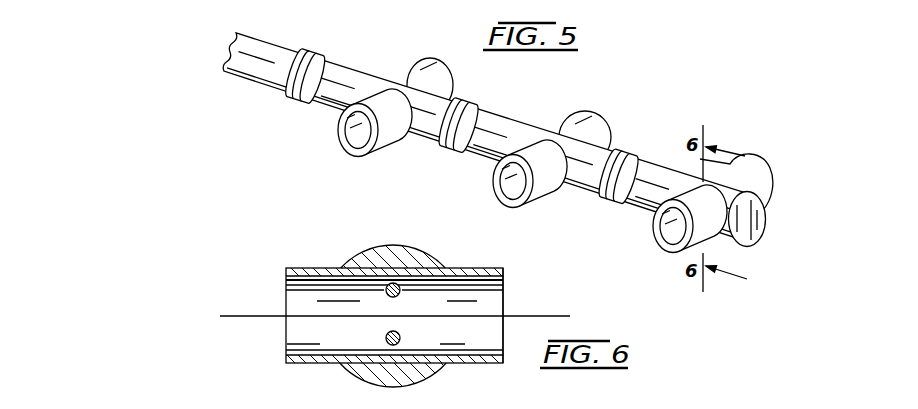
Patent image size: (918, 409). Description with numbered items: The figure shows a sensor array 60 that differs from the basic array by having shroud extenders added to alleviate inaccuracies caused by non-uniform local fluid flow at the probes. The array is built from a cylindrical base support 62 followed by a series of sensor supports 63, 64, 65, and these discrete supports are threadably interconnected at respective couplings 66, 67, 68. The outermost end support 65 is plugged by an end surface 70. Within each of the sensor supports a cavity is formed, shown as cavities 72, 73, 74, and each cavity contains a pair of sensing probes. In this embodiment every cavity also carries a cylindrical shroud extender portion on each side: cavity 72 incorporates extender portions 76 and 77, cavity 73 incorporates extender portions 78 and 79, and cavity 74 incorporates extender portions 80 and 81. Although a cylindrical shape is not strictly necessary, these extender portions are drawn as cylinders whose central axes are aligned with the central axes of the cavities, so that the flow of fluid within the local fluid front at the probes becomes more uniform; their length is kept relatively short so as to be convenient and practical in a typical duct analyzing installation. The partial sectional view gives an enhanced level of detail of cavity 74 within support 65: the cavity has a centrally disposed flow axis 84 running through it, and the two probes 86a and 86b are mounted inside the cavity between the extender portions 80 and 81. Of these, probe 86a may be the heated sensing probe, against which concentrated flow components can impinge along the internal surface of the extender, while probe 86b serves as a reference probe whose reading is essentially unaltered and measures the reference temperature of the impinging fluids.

In FIG. 5, the sensor array 60 is at (672, 62).
In FIG. 5, the cylindrical base support 62 is at (252, 45).
In FIG. 5, the sensor support 63 is at (374, 79).
In FIG. 5, the sensor support 64 is at (507, 123).
In FIG. 5, the end sensor support 65 is at (665, 178).
In FIG. 6, the end sensor support 65 is at (389, 255).
In FIG. 5, the coupling 66 is at (305, 62).
In FIG. 5, the coupling 67 is at (470, 103).
In FIG. 5, the coupling 68 is at (618, 205).
In FIG. 5, the end surface 70 is at (748, 220).
In FIG. 5, the cavity 72 is at (359, 146).
In FIG. 5, the cavity 73 is at (512, 200).
In FIG. 5, the cavity 74 is at (671, 242).
In FIG. 6, the cavity 74 is at (372, 305).
In FIG. 5, the shroud extender portion 76 is at (340, 136).
In FIG. 5, the shroud extender portion 77 is at (432, 72).
In FIG. 5, the shroud extender portion 78 is at (495, 192).
In FIG. 5, the shroud extender portion 79 is at (590, 122).
In FIG. 5, the shroud extender portion 80 is at (654, 234).
In FIG. 6, the shroud extender portion 80 is at (292, 268).
In FIG. 5, the shroud extender portion 81 is at (750, 173).
In FIG. 6, the shroud extender portion 81 is at (473, 270).
In FIG. 6, the flow axis 84 is at (523, 316).
In FIG. 6, the probe 86a is at (400, 339).
In FIG. 6, the probe 86b is at (390, 298).